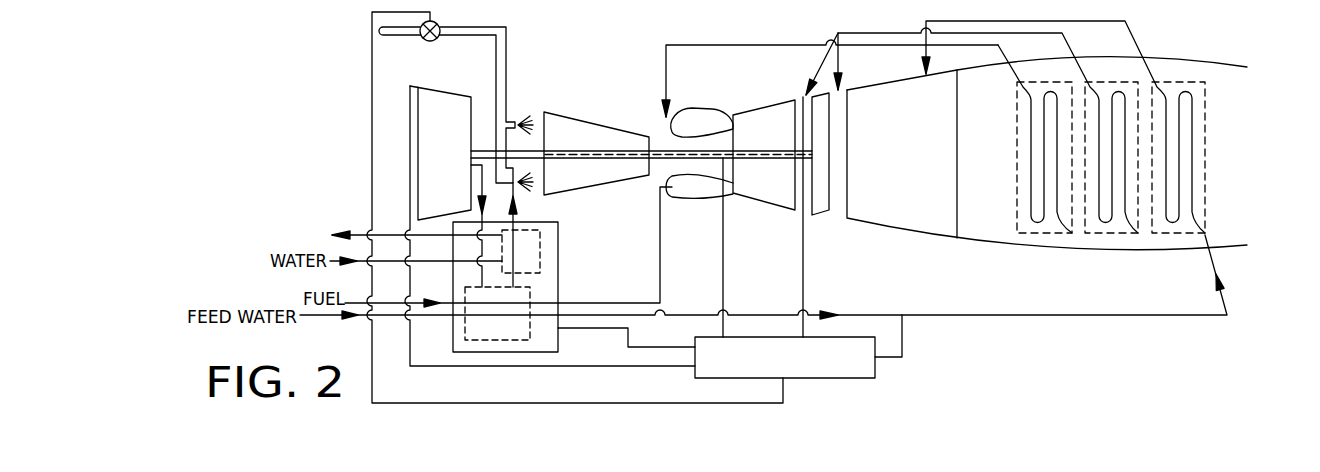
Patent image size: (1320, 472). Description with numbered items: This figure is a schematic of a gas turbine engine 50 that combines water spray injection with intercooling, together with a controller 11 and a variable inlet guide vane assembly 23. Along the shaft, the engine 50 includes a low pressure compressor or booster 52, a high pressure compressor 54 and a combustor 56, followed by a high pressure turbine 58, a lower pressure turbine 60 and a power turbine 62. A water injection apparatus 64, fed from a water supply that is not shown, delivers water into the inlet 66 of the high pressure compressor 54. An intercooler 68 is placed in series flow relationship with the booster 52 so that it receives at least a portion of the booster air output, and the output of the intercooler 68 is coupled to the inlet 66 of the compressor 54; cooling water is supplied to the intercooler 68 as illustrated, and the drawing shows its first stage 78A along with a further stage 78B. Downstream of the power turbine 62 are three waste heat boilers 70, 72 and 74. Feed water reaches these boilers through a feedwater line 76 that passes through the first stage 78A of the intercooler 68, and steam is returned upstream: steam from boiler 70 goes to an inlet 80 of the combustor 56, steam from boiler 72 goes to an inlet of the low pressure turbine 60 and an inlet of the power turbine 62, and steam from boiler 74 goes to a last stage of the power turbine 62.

The controller 11 is at (885, 374).
The variable inlet guide vane assembly 23 is at (412, 86).
The gas turbine engine 50 is at (1231, 48).
The low pressure compressor or booster 52 is at (438, 88).
The high pressure compressor 54 is at (628, 180).
The combustor 56 is at (677, 197).
The high pressure turbine 58 is at (747, 197).
The low pressure turbine 60 is at (817, 217).
The power turbine 62 is at (893, 230).
The water injection apparatus 64 is at (507, 50).
The inlet of high pressure compressor 66 is at (541, 114).
The intercooler 68 is at (560, 294).
The waste heat boiler 70 is at (1017, 147).
The waste heat boiler 72 is at (1110, 235).
The waste heat boiler 74 is at (1205, 125).
The feedwater line 76 is at (787, 313).
The first stage of intercooler 78A is at (509, 342).
The water pump 78B is at (541, 252).
The inlet of combustor 80 is at (667, 133).